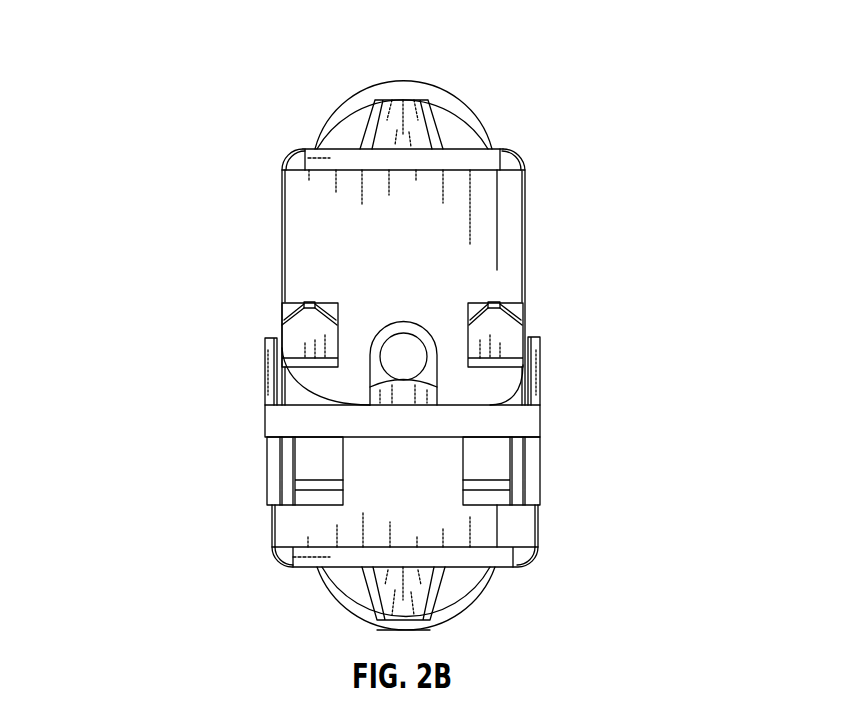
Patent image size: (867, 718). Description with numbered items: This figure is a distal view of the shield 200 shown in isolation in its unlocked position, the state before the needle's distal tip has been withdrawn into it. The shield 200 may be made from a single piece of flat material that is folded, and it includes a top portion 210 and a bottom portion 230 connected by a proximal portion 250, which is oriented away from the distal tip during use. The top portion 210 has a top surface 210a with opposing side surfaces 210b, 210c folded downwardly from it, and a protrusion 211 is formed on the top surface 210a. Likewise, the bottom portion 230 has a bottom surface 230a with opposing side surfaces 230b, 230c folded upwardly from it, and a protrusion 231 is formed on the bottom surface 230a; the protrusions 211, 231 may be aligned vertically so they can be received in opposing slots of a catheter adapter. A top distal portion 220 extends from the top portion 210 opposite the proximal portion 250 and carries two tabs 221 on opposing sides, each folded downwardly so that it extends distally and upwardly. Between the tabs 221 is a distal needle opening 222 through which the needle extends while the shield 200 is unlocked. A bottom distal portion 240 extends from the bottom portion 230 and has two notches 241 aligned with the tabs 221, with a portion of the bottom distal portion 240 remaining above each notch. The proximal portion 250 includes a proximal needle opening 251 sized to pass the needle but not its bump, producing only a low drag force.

The shield 200 is at (155, 63).
The top portion 210 is at (647, 185).
The top surface 210a is at (493, 148).
The side surface 210b is at (283, 210).
The side surface 210c is at (523, 247).
The protrusion 211 is at (442, 87).
The top distal portion 220 is at (485, 215).
The tabs 221 is at (295, 330).
The distal needle opening 222 is at (303, 370).
The bottom portion 230 is at (650, 478).
The bottom surface 230a is at (277, 557).
The side surface 230b is at (267, 397).
The side surface 230c is at (541, 373).
The protrusion 231 is at (458, 588).
The bottom distal portion 240 is at (530, 425).
The notches 241 is at (310, 460).
The proximal portion 250 is at (403, 322).
The proximal needle opening 251 is at (403, 378).